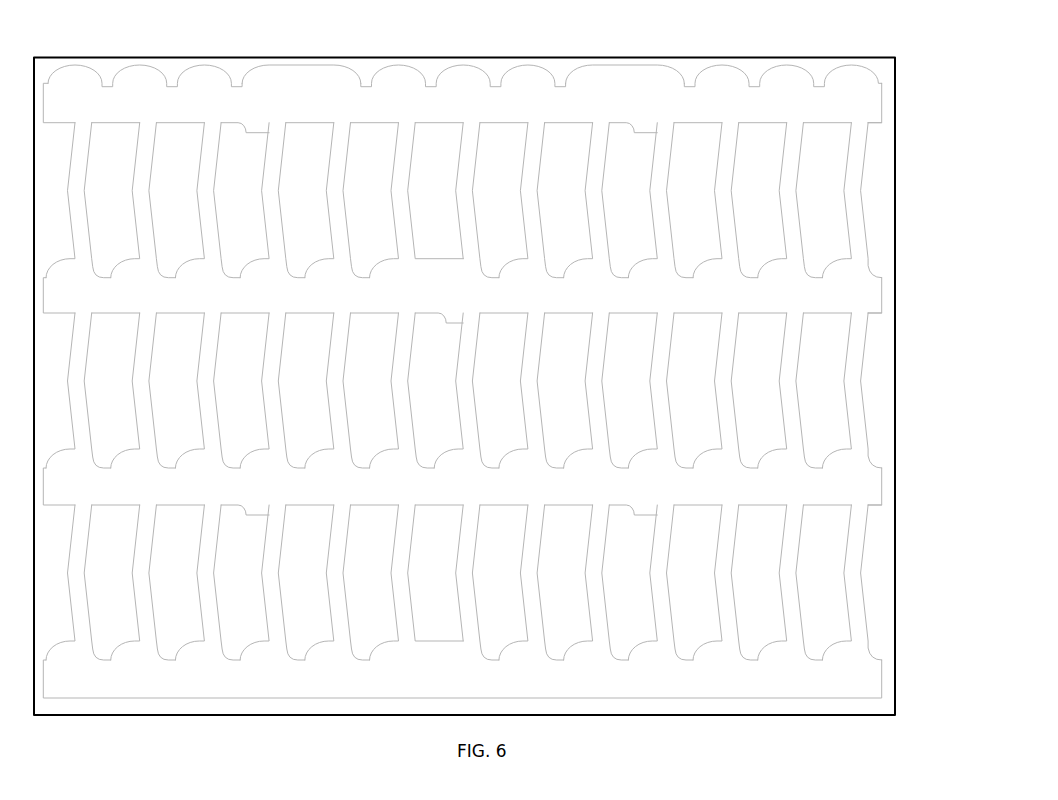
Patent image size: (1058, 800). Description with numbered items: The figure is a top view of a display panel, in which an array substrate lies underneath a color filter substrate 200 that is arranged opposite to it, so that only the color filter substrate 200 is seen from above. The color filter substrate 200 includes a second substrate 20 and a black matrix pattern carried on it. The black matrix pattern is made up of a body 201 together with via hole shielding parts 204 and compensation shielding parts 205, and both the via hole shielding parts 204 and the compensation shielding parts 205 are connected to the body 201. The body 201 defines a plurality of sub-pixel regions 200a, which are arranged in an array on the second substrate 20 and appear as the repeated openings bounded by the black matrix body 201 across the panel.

The second substrate 20 is at (483, 368).
The color filter substrate 200 is at (853, 51).
The sub-pixel region 200a is at (464, 342).
The body 201 is at (493, 363).
The via hole shielding part 204 is at (262, 127).
The compensation shielding part 205 is at (628, 78).